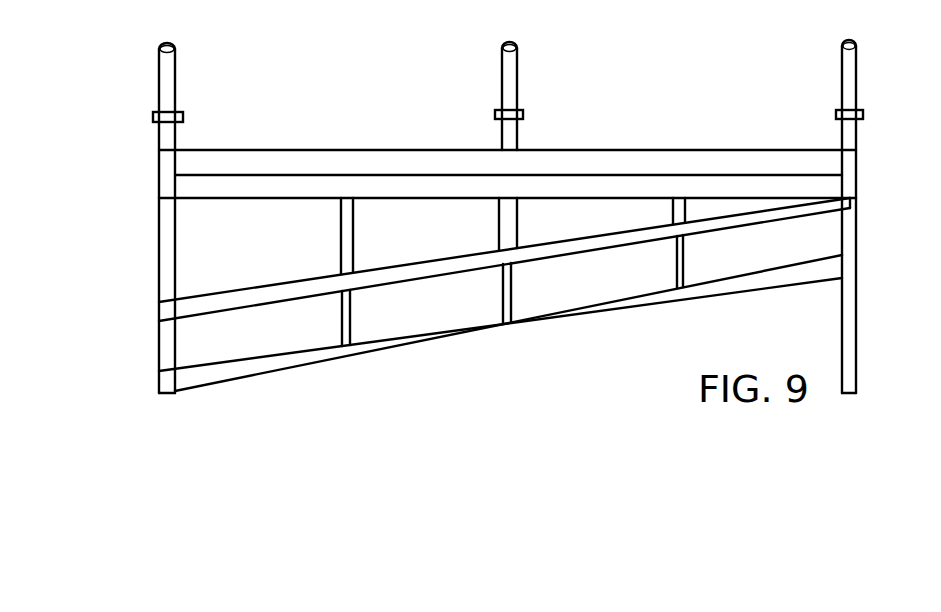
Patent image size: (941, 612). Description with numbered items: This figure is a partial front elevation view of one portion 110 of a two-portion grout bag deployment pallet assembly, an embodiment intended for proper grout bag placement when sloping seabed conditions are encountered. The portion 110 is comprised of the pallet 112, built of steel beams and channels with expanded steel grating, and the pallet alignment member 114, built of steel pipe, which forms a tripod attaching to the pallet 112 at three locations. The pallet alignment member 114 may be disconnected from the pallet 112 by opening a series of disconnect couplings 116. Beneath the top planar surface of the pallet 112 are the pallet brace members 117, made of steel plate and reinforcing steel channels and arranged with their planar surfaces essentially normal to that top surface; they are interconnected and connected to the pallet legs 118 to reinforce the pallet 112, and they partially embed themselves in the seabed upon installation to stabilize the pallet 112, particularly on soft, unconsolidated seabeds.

The grout bag deployment pallet portion 110 is at (360, 149).
The pallet 112 is at (649, 163).
The pallet alignment member 114 is at (850, 72).
The disconnect couplings 116 is at (183, 113).
The pallet brace members 117 is at (287, 358).
The pallet legs 118 is at (167, 346).